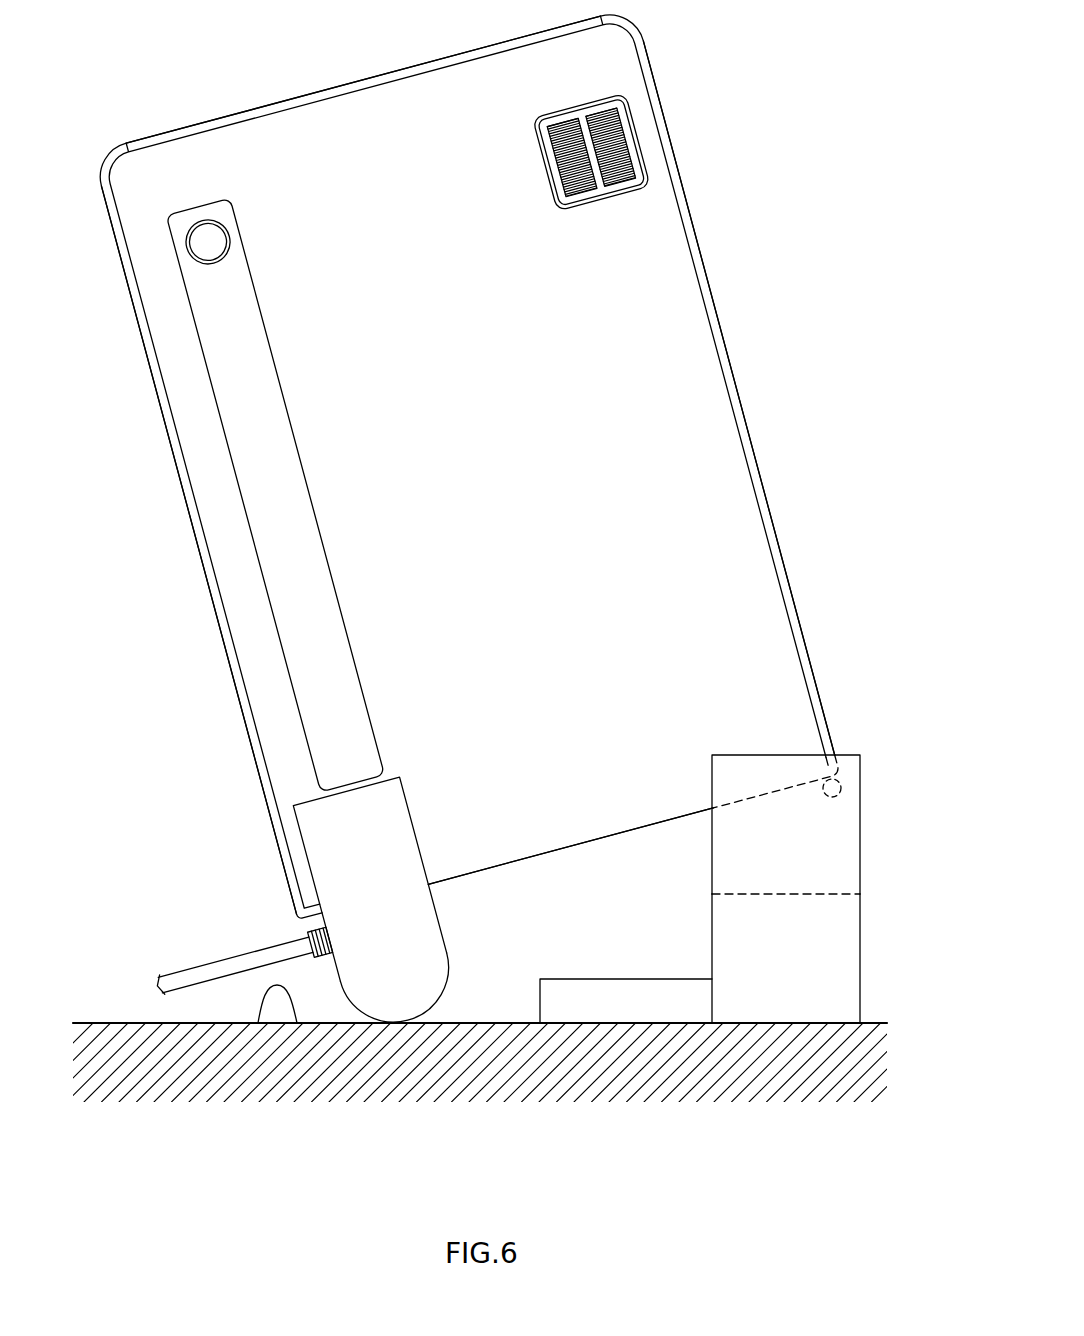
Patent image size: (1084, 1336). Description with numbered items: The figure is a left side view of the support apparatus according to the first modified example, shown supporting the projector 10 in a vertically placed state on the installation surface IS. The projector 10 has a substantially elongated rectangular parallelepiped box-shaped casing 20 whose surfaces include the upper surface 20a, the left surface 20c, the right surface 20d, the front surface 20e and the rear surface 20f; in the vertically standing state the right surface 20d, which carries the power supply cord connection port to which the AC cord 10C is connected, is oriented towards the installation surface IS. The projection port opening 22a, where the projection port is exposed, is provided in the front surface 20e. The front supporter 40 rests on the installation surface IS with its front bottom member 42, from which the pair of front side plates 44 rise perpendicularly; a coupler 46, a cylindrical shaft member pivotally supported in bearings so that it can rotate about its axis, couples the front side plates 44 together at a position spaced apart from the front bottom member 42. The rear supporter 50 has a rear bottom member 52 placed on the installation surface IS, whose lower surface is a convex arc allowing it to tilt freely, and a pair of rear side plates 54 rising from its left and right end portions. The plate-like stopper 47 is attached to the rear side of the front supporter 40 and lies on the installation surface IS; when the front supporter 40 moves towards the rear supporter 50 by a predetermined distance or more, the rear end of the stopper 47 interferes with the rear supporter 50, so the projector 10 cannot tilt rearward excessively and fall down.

The projector 10 is at (164, 95).
The AC cord 10C is at (247, 953).
The casing 20 is at (455, 475).
The upper surface 20a is at (275, 495).
The left surface 20c is at (363, 79).
The right surface 20d is at (570, 846).
The front surface 20e is at (738, 398).
The rear surface 20f is at (198, 550).
The projection port opening 22a is at (592, 152).
The front supporter 40 is at (743, 980).
The front bottom member 42 is at (799, 960).
The front side plates 44 is at (802, 845).
The coupler 46 is at (843, 790).
The stopper 47 is at (640, 993).
The rear supporter 50 is at (345, 992).
The rear bottom member 52 is at (405, 1042).
The rear side plates 54 is at (369, 879).
The installation surface IS is at (263, 990).